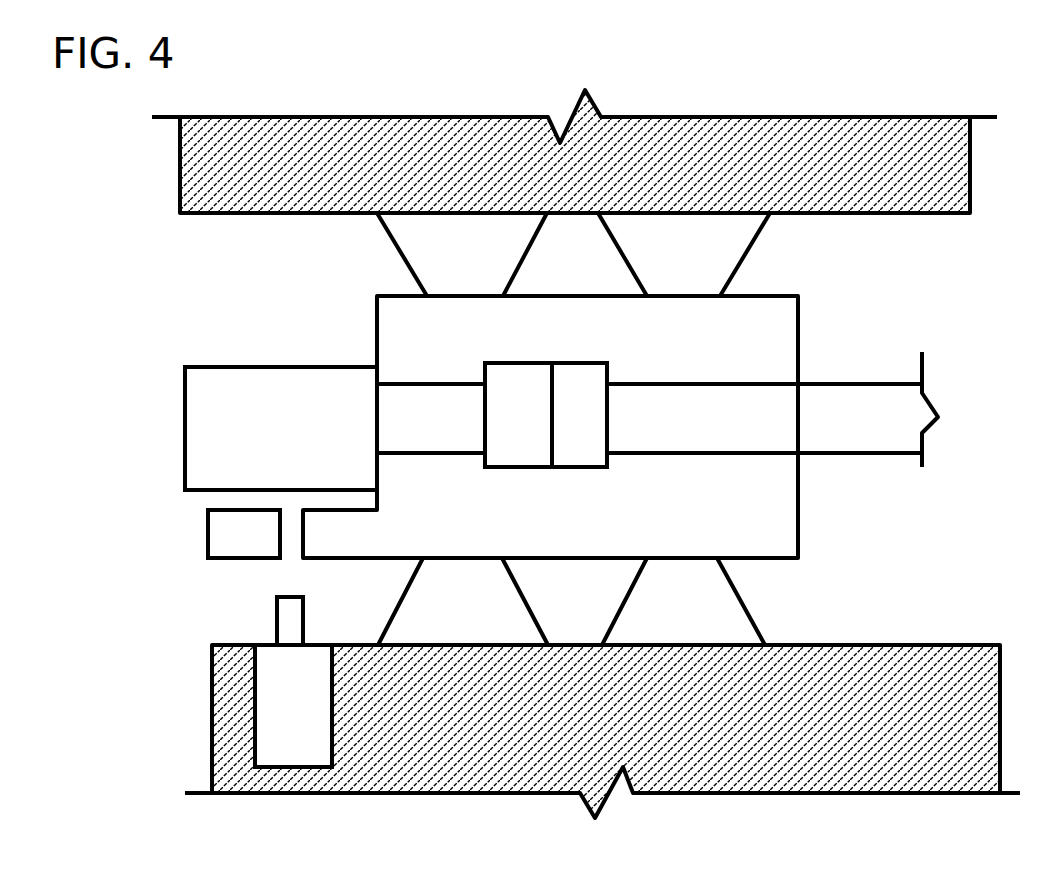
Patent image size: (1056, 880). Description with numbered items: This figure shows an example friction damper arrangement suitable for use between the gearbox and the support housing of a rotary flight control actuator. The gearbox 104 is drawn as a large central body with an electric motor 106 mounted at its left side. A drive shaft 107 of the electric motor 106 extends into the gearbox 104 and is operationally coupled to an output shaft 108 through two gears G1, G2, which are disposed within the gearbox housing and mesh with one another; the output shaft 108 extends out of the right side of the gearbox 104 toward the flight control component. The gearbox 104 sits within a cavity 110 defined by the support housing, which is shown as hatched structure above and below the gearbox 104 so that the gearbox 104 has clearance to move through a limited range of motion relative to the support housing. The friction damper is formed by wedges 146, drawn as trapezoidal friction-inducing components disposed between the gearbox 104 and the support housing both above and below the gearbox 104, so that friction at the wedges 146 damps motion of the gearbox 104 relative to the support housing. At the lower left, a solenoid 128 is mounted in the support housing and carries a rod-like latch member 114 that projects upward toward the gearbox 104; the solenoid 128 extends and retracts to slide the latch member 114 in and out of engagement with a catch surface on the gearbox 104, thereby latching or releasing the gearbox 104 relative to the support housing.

The gearbox 104 is at (768, 519).
The electric motor 106 is at (281, 428).
The drive shaft 107 is at (431, 418).
The output shaft 108 is at (772, 409).
The cavity 110 is at (892, 213).
The latch member 114 is at (275, 615).
The solenoid 128 is at (602, 731).
The wedges 146 is at (393, 245).
The gear G1 is at (518, 415).
The gear G2 is at (579, 415).